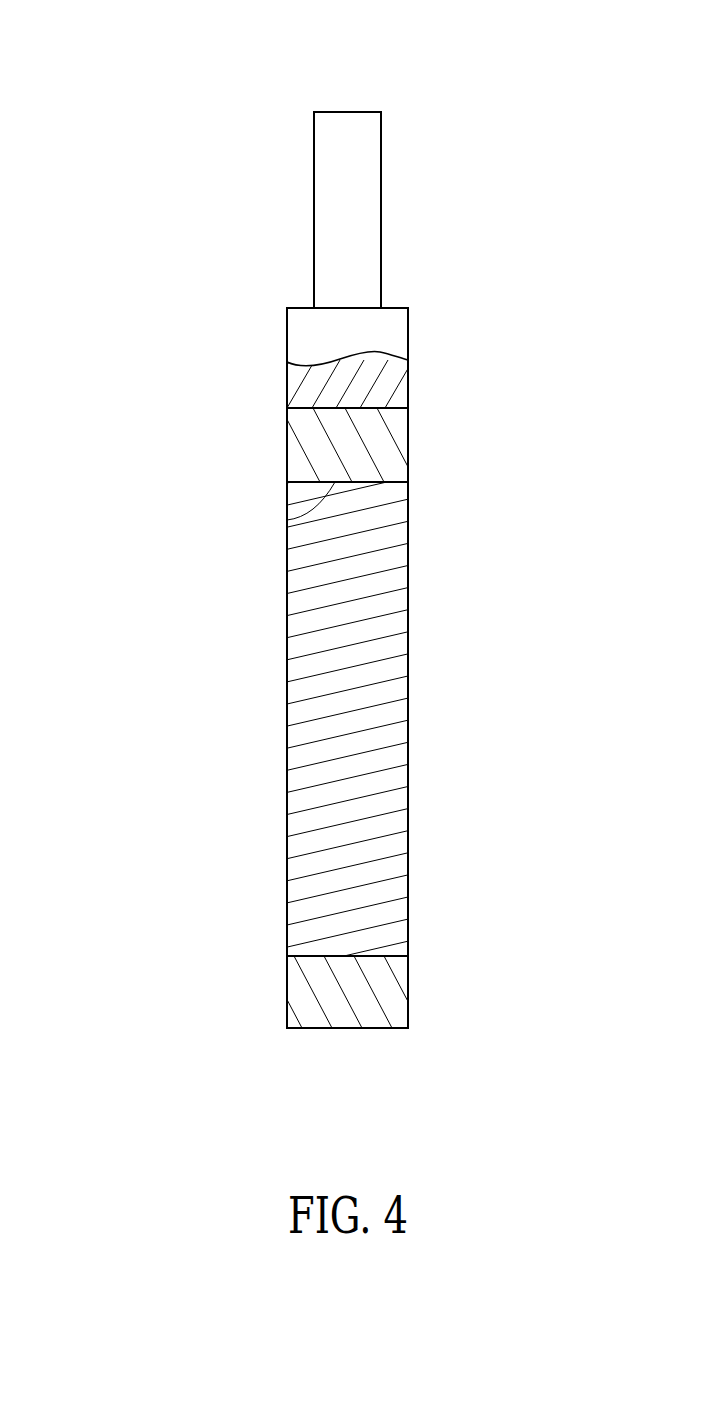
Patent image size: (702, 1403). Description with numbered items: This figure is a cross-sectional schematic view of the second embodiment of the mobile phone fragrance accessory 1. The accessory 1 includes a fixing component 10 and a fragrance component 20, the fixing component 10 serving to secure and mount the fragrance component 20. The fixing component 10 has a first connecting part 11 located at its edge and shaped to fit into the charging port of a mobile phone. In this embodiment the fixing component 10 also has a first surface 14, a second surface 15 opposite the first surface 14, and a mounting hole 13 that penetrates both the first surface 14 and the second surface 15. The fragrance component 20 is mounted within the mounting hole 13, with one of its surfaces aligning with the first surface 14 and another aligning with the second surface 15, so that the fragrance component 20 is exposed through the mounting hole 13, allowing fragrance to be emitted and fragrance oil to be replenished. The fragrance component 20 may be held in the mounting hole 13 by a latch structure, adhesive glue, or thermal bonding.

The mobile phone fragrance accessory 1 is at (212, 65).
The fixing component 10 is at (367, 448).
The first connecting part 11 is at (347, 386).
The mounting hole 13 is at (287, 520).
The first surface 14 is at (408, 996).
The second surface 15 is at (287, 972).
The fragrance component 20 is at (327, 690).